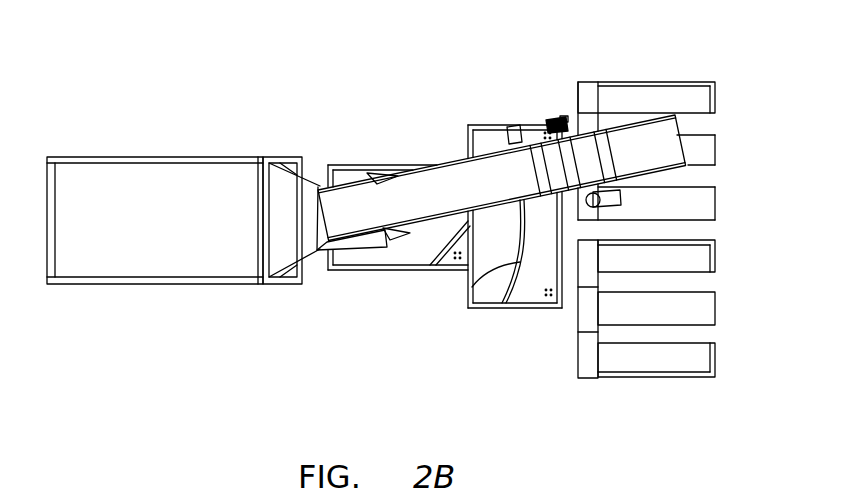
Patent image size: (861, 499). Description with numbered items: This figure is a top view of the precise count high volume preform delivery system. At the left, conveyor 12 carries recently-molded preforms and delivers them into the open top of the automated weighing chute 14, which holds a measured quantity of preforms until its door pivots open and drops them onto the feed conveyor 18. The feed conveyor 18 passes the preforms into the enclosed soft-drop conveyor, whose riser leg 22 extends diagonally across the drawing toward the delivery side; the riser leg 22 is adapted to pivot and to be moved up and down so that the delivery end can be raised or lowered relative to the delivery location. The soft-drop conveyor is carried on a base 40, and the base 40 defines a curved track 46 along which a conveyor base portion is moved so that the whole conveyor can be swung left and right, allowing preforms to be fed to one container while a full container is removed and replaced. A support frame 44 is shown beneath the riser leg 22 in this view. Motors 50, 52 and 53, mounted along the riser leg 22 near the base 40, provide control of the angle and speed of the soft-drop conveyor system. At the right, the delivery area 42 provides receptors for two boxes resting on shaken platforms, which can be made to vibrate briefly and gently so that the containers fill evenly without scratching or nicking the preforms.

The conveyor 12 is at (140, 163).
The automated weighing chute 14 is at (288, 253).
The feed conveyor 18 is at (350, 200).
The riser leg 22 is at (433, 183).
The base 40 is at (518, 312).
The delivery area 42 is at (650, 380).
The support frame 44 is at (375, 273).
The track 46 is at (470, 290).
The motor 50 is at (512, 130).
The motor 52 is at (549, 116).
The motor 53 is at (622, 203).